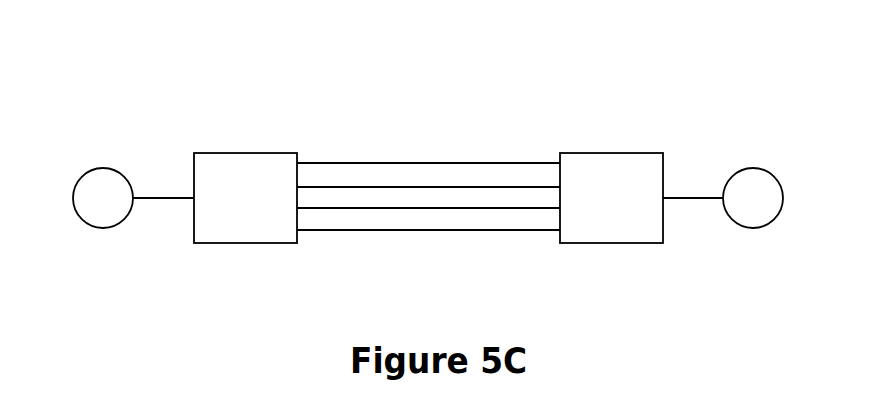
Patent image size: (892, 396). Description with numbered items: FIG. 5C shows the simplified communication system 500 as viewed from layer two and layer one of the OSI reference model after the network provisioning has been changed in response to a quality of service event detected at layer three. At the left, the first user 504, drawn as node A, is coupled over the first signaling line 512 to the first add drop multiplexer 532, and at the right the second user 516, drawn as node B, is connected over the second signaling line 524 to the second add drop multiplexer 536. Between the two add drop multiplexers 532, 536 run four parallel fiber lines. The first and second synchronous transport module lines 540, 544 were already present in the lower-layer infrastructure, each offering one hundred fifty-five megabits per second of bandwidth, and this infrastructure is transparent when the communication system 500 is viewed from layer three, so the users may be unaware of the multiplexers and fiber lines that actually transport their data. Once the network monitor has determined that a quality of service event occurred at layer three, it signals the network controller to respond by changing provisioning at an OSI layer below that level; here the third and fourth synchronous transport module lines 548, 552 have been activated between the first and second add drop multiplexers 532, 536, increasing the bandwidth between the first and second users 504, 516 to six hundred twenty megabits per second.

The communication system 500 is at (399, 80).
The first user 504 is at (83, 222).
The first signaling line 512 is at (155, 197).
The second user 516 is at (774, 219).
The second signaling line 524 is at (700, 197).
The first add drop multiplexer 532 is at (240, 153).
The second add drop multiplexer 536 is at (628, 153).
The first STM-1 line 540 is at (322, 163).
The second STM-1 line 544 is at (367, 187).
The third STM-1 line 548 is at (425, 208).
The fourth STM-1 line 552 is at (485, 230).